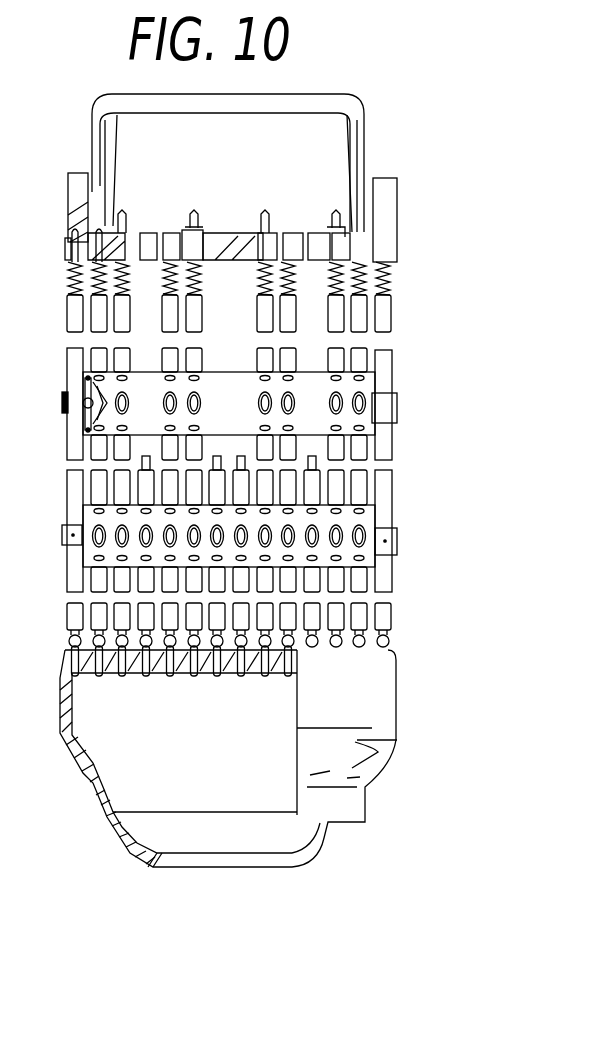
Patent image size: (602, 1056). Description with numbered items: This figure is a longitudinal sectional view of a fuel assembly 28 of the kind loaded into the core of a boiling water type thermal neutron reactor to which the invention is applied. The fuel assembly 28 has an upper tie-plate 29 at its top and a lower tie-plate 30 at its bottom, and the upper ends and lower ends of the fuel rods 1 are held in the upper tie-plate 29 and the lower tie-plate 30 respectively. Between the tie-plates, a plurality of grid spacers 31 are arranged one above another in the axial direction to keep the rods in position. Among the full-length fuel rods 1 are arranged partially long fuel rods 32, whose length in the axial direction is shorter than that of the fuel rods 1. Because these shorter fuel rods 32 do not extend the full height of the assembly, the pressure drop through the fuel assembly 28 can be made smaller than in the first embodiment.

The fuel rod 1 is at (293, 493).
The fuel assembly 28 is at (60, 408).
The upper tie-plate 29 is at (397, 248).
The lower tie-plate 30 is at (385, 700).
The grid spacer 31 is at (397, 538).
The partially long fuel rod 32 is at (143, 491).